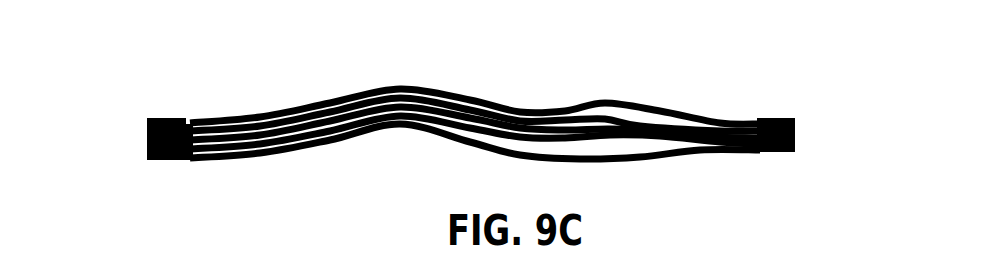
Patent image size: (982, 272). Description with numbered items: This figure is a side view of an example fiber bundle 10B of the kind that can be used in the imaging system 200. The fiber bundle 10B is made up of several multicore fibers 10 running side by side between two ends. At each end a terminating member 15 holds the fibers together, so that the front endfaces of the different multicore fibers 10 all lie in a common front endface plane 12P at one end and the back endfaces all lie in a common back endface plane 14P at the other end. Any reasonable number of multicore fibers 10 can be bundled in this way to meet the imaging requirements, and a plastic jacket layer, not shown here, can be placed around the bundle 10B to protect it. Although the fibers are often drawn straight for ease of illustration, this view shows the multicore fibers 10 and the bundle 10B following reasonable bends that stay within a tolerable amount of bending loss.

The imaging system 200 is at (206, 64).
The fiber bundle 10B is at (531, 82).
The multicore fiber 10 is at (367, 124).
The front endface plane 12P is at (148, 135).
The back endface plane 14P is at (797, 132).
The terminating member 15 is at (163, 160).